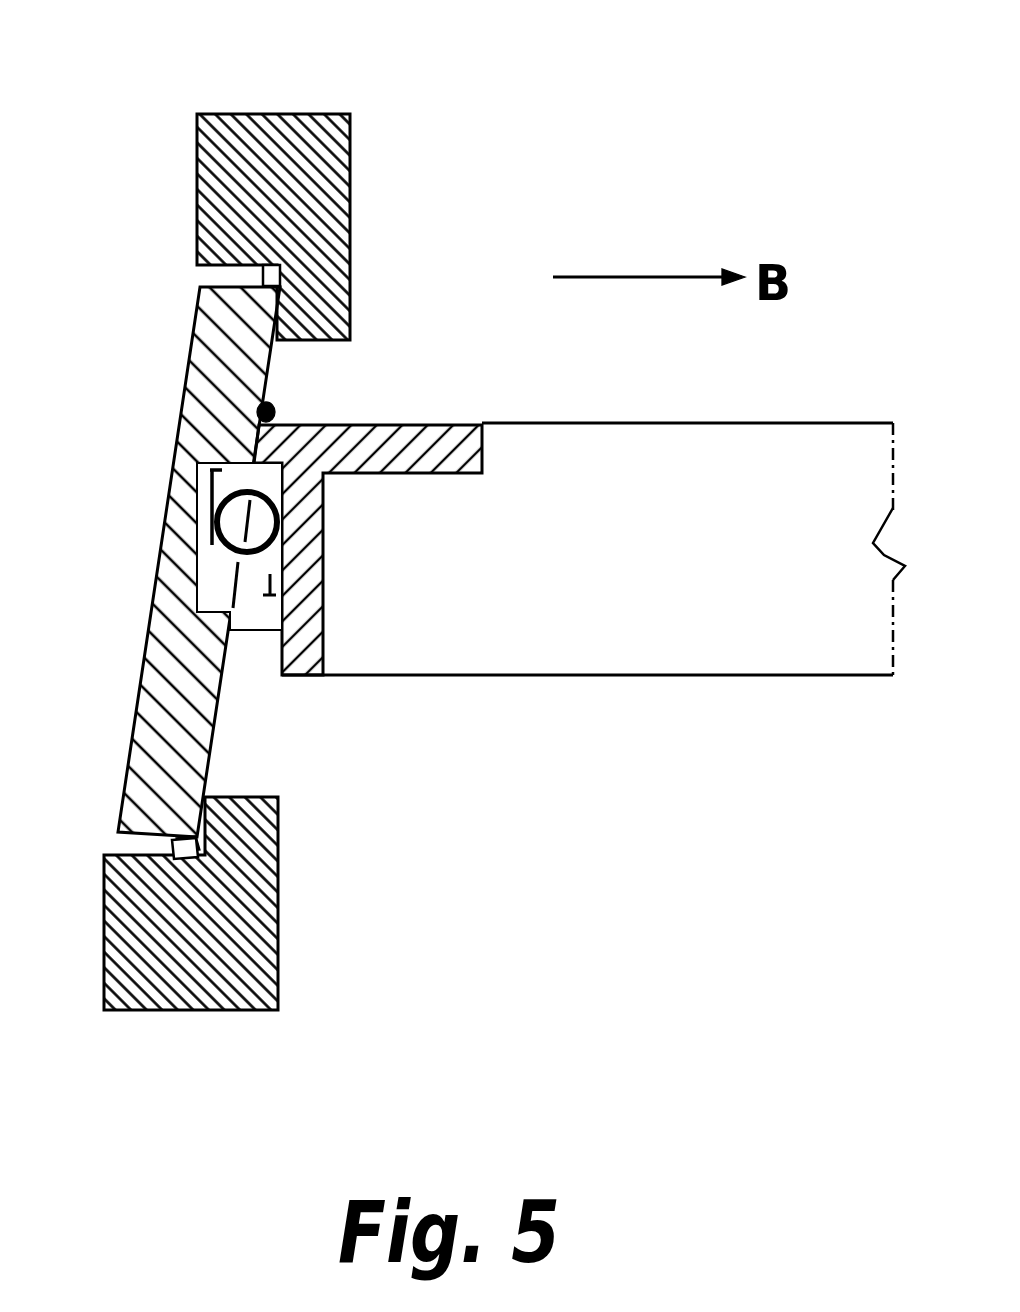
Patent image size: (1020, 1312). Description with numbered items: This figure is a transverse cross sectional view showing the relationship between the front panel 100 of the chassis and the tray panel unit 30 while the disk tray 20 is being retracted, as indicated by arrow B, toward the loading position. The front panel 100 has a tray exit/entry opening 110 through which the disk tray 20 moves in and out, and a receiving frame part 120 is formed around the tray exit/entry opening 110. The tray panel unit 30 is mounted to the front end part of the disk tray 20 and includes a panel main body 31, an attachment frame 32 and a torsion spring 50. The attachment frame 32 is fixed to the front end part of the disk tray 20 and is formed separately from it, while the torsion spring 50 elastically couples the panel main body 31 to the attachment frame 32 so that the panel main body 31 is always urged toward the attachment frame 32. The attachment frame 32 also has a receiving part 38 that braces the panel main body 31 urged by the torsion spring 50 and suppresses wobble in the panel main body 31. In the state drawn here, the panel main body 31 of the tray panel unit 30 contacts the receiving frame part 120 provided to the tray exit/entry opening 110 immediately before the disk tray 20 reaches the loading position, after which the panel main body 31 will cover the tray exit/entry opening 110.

The front panel 100 is at (298, 114).
The tray exit/entry opening 110 is at (262, 782).
The receiving frame part 120 is at (264, 276).
The panel main body 31 is at (135, 705).
The attachment frame 32 is at (398, 422).
The tray panel unit 30 is at (579, 560).
The disk tray 20 is at (690, 677).
The receiving part 38 is at (262, 410).
The torsion spring 50 is at (215, 535).